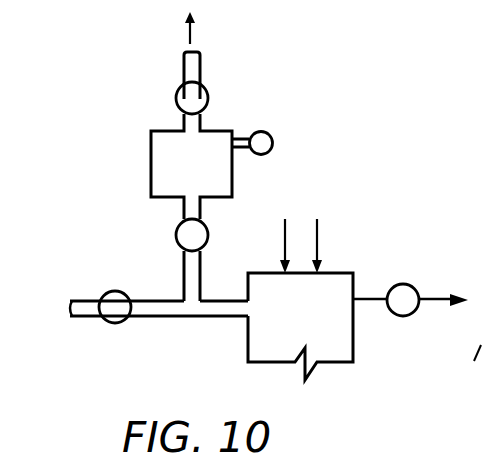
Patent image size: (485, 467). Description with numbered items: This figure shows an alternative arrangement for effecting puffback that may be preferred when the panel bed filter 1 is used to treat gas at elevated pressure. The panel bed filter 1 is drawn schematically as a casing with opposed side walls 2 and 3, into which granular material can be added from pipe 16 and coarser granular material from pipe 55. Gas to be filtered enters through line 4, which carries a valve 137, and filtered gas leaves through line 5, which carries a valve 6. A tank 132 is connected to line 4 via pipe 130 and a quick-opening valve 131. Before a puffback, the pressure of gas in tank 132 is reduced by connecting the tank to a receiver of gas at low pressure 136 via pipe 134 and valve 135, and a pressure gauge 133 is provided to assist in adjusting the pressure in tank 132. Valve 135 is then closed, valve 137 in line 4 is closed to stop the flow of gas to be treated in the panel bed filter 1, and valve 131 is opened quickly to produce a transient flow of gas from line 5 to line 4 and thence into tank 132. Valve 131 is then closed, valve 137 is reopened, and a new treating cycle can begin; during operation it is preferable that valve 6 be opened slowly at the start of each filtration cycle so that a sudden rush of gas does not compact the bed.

The panel bed filter 1 is at (240, 355).
The side wall 2 is at (353, 341).
The side wall 3 is at (248, 338).
The line 4 is at (208, 315).
The line 5 is at (373, 297).
The valve 6 is at (410, 287).
The pipe 16 is at (285, 240).
The pipe 55 is at (317, 240).
The pipe 130 is at (184, 270).
The quick-opening valve 131 is at (177, 233).
The tank 132 is at (151, 165).
The pressure gauge 133 is at (272, 134).
The pipe 134 is at (201, 69).
The valve 135 is at (176, 97).
The receiver of gas at low pressure 136 is at (186, 33).
The valve 137 is at (107, 324).